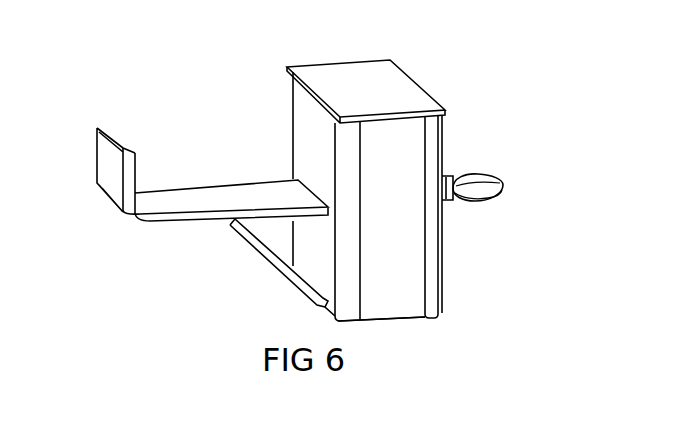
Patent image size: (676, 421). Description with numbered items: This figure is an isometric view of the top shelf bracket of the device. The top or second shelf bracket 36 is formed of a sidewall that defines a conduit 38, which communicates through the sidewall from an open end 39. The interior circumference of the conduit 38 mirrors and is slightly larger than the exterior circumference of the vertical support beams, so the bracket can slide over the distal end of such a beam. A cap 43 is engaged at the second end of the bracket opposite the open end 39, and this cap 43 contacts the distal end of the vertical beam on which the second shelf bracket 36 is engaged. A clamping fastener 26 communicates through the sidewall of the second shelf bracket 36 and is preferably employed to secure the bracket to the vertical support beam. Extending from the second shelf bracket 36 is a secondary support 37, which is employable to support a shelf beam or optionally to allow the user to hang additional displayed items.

The clamping fastener 26 is at (488, 174).
The second shelf bracket 36 is at (432, 98).
The secondary support 37 is at (128, 153).
The conduit 38 is at (390, 323).
The open end 39 is at (423, 318).
The cap 43 is at (352, 77).